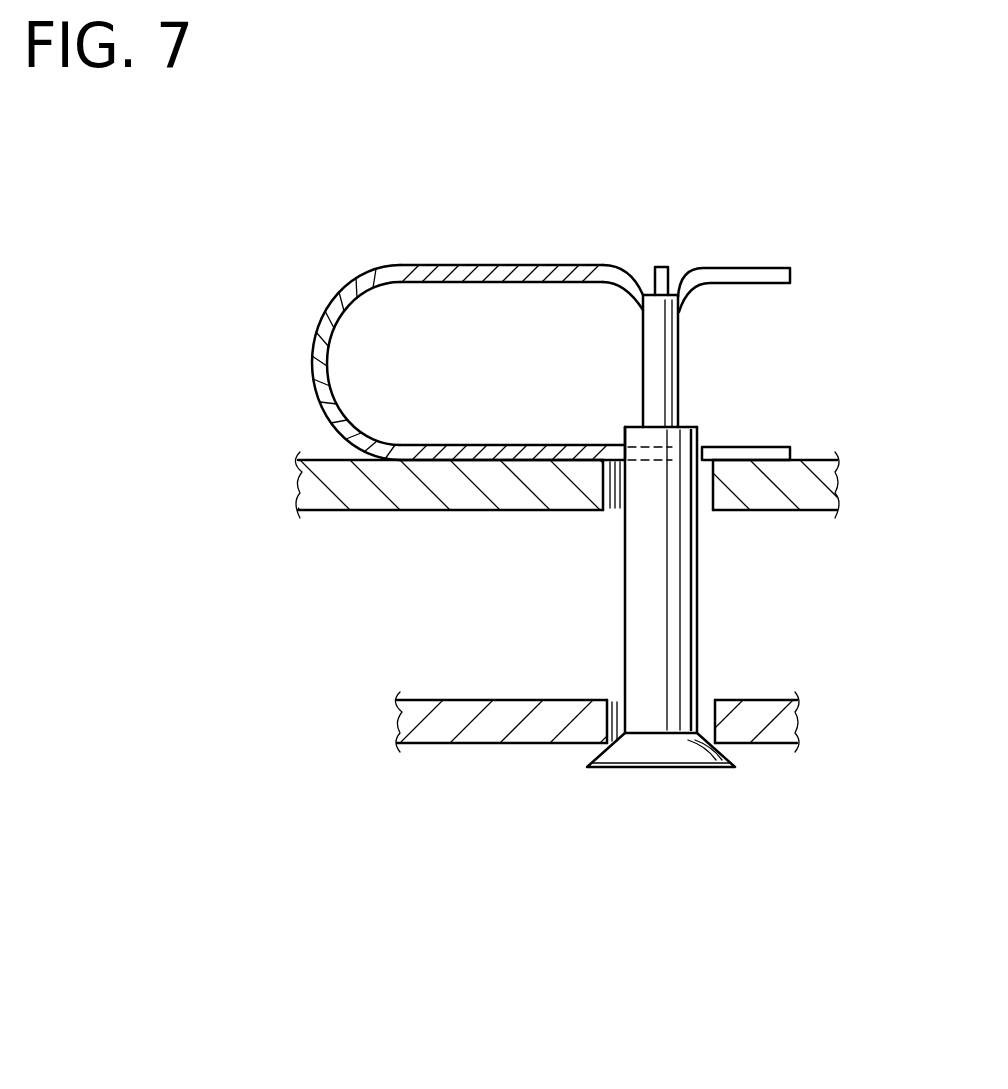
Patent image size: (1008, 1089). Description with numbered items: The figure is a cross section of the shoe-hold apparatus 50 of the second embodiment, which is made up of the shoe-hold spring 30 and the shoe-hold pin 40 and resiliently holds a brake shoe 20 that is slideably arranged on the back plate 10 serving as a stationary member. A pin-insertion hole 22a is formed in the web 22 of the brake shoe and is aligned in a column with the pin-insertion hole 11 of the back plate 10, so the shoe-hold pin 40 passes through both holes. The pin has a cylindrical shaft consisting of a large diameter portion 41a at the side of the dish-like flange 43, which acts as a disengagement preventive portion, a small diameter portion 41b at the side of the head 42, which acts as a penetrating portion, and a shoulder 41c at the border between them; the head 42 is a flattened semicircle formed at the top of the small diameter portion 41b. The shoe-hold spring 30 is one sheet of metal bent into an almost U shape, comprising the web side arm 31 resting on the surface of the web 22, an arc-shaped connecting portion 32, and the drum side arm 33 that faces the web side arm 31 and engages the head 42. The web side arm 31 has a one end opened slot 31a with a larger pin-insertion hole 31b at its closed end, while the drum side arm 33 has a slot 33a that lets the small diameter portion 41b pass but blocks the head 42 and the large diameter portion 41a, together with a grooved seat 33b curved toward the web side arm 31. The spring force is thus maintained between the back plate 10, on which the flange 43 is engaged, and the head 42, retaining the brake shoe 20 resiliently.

The back plate 10 is at (574, 762).
The pin-insertion hole 11 is at (703, 700).
The brake shoe 20 is at (571, 452).
The web 22 is at (455, 510).
The pin-insertion hole 22a is at (710, 510).
The shoe-hold spring 30 is at (449, 250).
The web side arm 31 is at (470, 445).
The slot 31a is at (747, 453).
The pin-insertion hole 31b is at (677, 430).
The connecting portion 32 is at (318, 347).
The drum side arm 33 is at (480, 282).
The slot 33a is at (747, 275).
The seat 33b is at (637, 270).
The shoe-hold pin 40 is at (666, 250).
The large diameter portion 41a is at (622, 630).
The small diameter portion 41b is at (642, 350).
The shoulder 41c is at (642, 413).
The head 42 is at (680, 287).
The flange 43 is at (670, 767).
The shoe-hold apparatus 50 is at (655, 87).